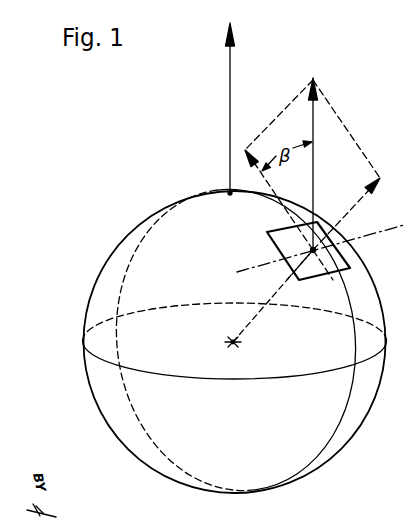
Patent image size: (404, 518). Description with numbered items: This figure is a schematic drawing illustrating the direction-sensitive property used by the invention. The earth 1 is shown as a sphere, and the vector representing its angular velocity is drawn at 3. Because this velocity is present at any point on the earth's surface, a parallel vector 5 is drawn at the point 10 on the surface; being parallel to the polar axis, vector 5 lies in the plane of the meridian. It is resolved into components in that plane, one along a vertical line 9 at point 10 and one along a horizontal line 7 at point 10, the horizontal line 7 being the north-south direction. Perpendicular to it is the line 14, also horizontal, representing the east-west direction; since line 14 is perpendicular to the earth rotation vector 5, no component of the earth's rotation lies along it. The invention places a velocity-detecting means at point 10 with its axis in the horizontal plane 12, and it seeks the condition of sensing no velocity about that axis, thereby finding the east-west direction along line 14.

The earth 1 is at (238, 341).
The angular velocity vector 3 is at (229, 141).
The parallel vector 5 is at (314, 177).
The horizontal line 7 is at (264, 176).
The vertical line 9 is at (358, 201).
The point 10 is at (359, 256).
The horizontal plane 12 is at (266, 235).
The line 14 is at (251, 267).